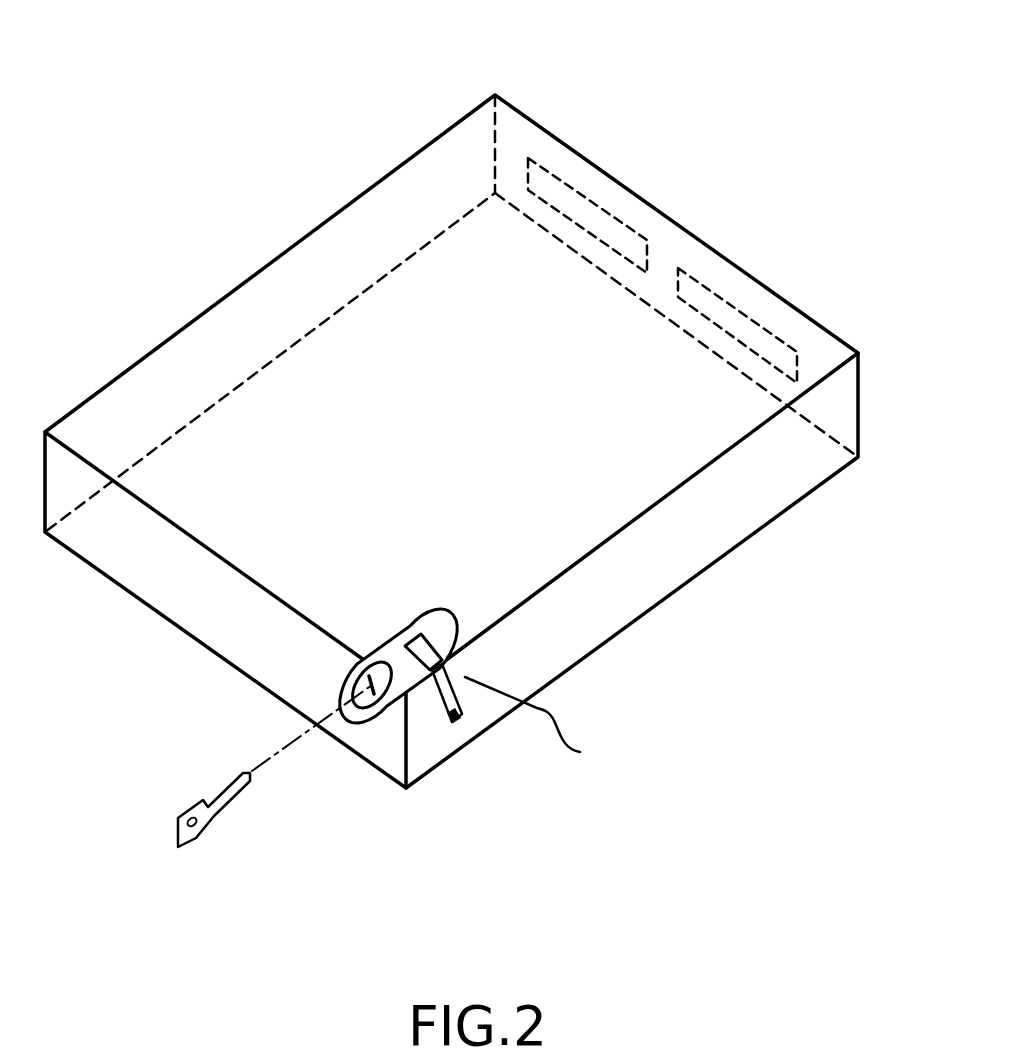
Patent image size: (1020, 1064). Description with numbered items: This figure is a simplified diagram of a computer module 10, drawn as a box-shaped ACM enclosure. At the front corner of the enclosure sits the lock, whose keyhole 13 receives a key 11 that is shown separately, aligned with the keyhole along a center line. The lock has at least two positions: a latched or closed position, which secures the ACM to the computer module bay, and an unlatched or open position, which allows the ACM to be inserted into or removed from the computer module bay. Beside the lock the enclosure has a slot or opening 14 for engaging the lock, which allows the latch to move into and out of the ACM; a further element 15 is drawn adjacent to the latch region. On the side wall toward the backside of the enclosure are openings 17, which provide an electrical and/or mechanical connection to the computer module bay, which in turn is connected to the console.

The computer module 10 is at (762, 76).
The key 11 is at (192, 837).
The keyhole 13 is at (371, 680).
The slot or opening 14 is at (448, 672).
The lock shaft 15 is at (477, 737).
The openings 17 is at (753, 333).